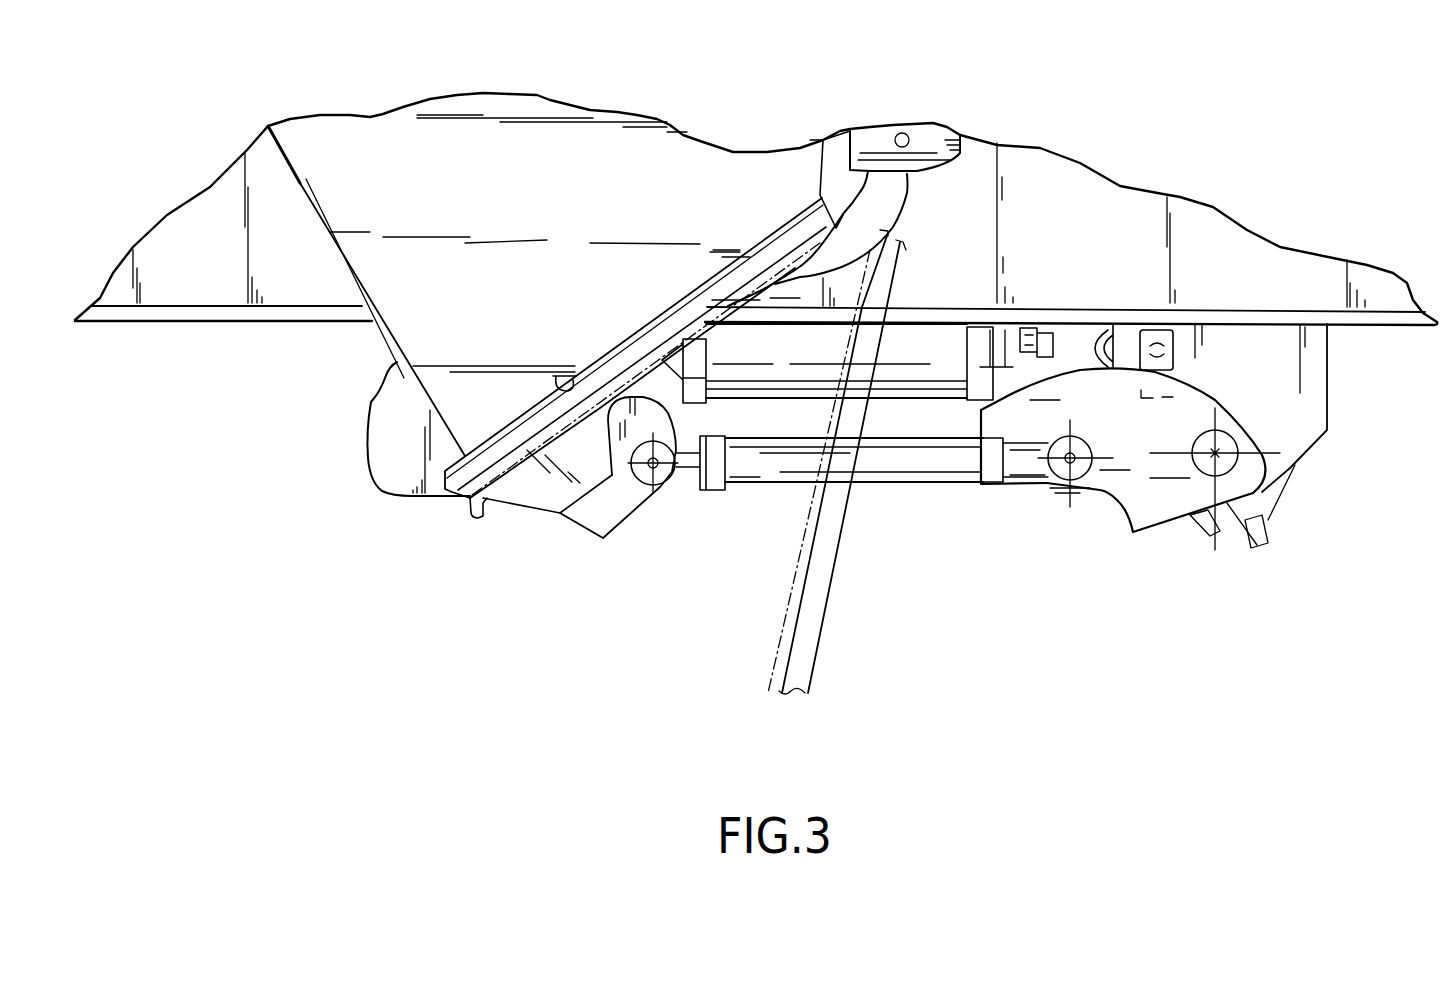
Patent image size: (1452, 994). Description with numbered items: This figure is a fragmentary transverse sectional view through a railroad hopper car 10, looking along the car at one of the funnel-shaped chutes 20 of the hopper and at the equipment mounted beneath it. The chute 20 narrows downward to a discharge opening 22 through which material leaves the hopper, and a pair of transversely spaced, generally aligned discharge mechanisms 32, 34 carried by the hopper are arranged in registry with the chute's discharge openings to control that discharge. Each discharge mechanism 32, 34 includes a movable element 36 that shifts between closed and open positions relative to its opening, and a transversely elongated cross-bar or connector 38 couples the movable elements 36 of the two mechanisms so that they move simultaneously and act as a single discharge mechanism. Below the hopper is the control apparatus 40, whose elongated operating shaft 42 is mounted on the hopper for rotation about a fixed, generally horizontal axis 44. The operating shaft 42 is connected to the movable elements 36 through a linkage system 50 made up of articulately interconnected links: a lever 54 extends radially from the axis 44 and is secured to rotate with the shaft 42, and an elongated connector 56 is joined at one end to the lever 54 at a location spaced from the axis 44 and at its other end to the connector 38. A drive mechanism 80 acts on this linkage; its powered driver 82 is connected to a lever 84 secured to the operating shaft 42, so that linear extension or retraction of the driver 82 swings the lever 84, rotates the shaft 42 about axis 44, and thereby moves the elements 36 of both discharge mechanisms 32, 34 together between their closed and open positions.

The railroad hopper car 10 is at (1332, 222).
The funnel-shaped chute 20 is at (517, 175).
The discharge opening 22 is at (494, 368).
The discharge mechanism 32 is at (493, 516).
The discharge mechanism 34 is at (661, 313).
The movable element 36 is at (470, 507).
The cross-bar or connector 38 is at (553, 500).
The control apparatus 40 is at (1065, 559).
The operating shaft 42 is at (1203, 463).
The horizontal axis 44 is at (1220, 447).
The linkage system 50 is at (931, 503).
The lever (link) 54 is at (1132, 515).
The elongated connector (link) 56 is at (752, 473).
The drive mechanism 80 is at (925, 294).
The powered driver 82 is at (935, 343).
The lever 84 is at (1110, 340).